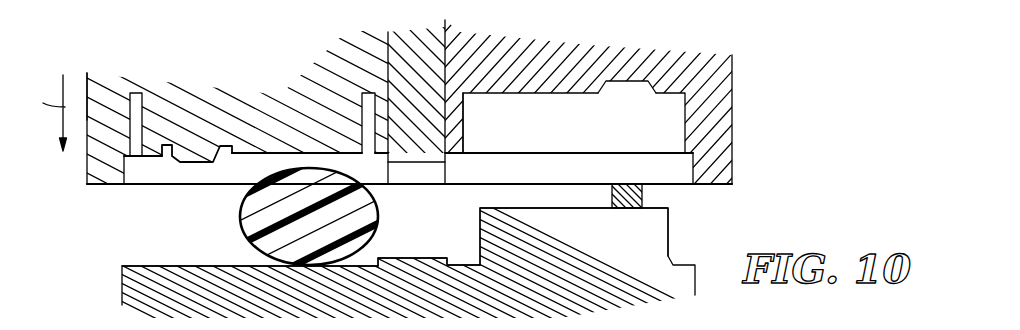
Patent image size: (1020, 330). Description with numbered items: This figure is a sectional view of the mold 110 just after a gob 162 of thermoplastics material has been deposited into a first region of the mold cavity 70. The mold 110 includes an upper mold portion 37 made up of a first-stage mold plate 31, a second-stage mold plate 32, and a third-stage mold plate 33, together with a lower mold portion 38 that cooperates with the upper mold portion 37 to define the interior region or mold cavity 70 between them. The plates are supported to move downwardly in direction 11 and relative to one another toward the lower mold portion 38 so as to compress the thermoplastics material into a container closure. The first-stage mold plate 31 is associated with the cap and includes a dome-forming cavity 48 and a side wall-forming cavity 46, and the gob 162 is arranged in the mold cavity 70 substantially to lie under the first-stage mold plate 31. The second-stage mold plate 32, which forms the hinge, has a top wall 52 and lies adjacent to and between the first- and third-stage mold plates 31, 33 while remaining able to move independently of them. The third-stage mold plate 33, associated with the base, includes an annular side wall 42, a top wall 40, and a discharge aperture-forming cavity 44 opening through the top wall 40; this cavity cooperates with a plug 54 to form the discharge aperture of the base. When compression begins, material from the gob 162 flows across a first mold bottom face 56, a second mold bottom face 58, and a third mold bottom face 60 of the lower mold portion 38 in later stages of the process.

The direction 11 is at (48, 113).
The first-stage mold plate 31 is at (243, 103).
The second-stage mold plate 32 is at (425, 55).
The third-stage mold plate 33 is at (578, 64).
The upper mold portion 37 is at (82, 79).
The lower mold portion 38 is at (116, 277).
The top wall 40 is at (556, 96).
The annular side wall 42 is at (463, 127).
The discharge aperture-forming cavity 44 is at (643, 86).
The side wall-forming cavity 46 is at (140, 100).
The dome-forming cavity 48 is at (168, 148).
The top wall 52 is at (418, 165).
The plug 54 is at (628, 195).
The first mold bottom face 56 is at (215, 266).
The second mold bottom face 58 is at (425, 258).
The third mold bottom face 60 is at (562, 207).
The mold cavity 70 is at (128, 194).
The mold 110 is at (745, 85).
The gob 162 is at (247, 217).